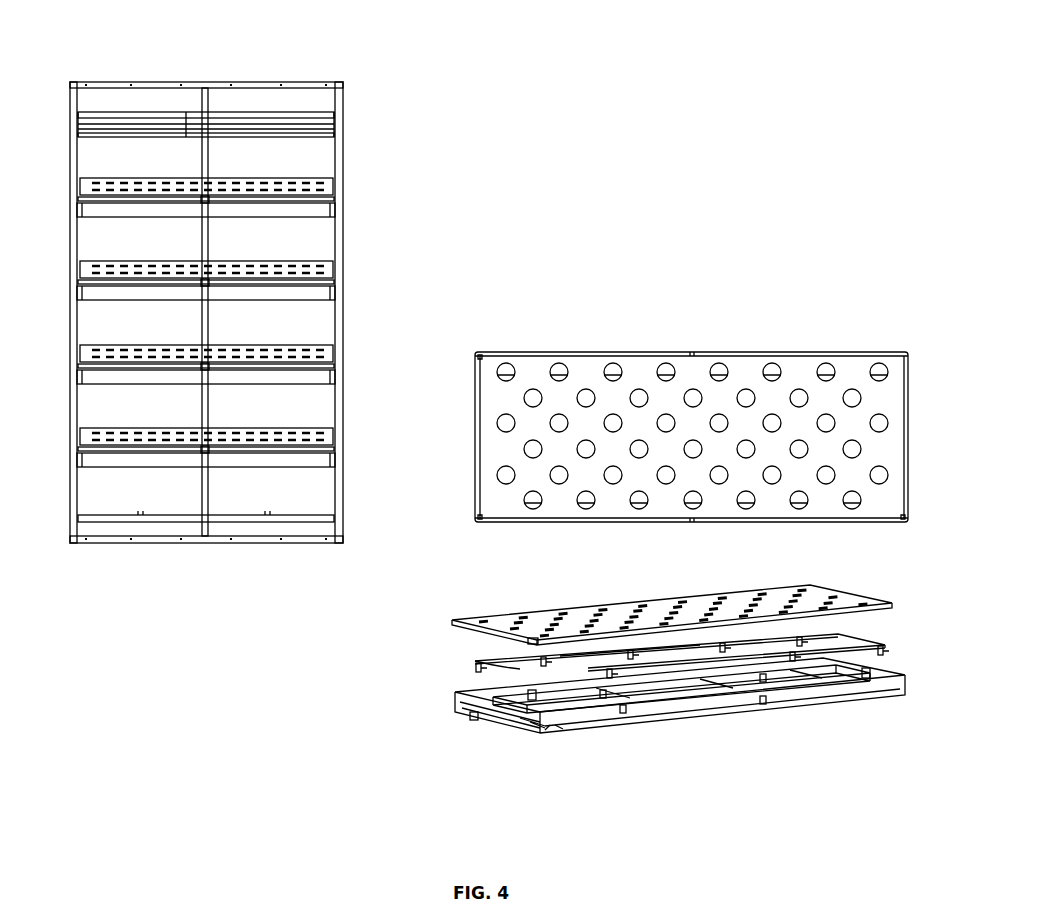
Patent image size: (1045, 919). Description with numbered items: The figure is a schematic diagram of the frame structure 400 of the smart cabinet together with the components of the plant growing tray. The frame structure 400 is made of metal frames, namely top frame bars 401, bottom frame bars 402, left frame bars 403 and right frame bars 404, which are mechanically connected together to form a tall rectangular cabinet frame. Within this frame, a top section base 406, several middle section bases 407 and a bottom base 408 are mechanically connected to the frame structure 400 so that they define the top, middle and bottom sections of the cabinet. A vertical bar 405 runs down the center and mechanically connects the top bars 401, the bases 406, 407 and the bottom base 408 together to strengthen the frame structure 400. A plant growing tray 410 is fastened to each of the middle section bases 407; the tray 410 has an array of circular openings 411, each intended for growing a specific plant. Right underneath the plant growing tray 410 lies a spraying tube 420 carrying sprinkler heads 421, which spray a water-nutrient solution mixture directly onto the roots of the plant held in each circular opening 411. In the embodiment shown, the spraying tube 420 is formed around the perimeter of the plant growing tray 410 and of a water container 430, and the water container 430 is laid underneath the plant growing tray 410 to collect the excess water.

The frame structure 400 is at (536, 98).
The top frame bars 401 is at (192, 80).
The bottom frame bars 402 is at (197, 548).
The left frame bars 403 is at (70, 353).
The right frame bars 404 is at (343, 230).
The vertical bar 405 is at (200, 322).
The top section base 406 is at (338, 118).
The middle section bases 407 is at (328, 214).
The bottom base 408 is at (318, 523).
The plant growing tray 410 is at (213, 176).
The circular openings 411 is at (110, 183).
The spraying tube 420 is at (474, 661).
The sprinkler heads 421 is at (474, 672).
The water container 430 is at (452, 700).